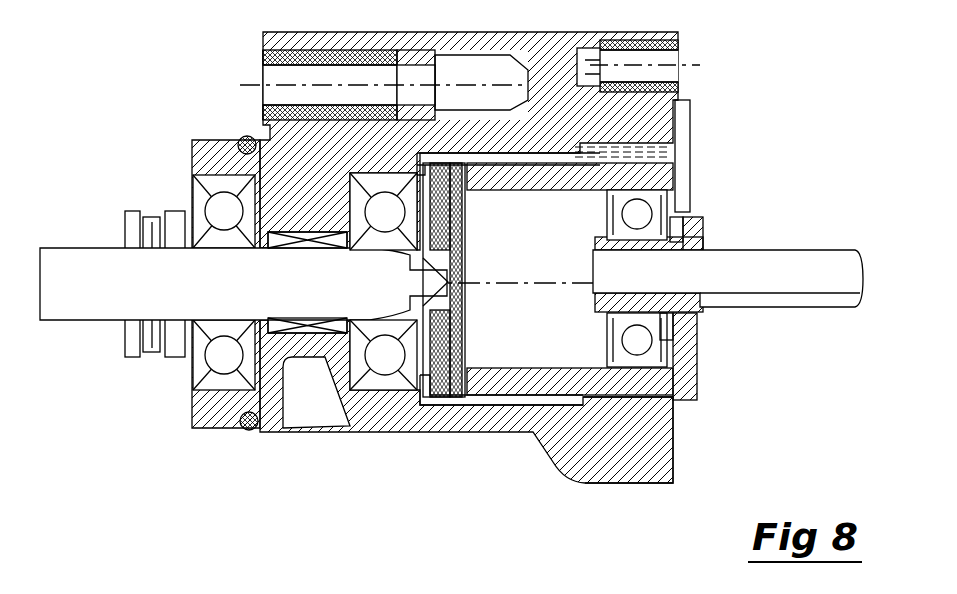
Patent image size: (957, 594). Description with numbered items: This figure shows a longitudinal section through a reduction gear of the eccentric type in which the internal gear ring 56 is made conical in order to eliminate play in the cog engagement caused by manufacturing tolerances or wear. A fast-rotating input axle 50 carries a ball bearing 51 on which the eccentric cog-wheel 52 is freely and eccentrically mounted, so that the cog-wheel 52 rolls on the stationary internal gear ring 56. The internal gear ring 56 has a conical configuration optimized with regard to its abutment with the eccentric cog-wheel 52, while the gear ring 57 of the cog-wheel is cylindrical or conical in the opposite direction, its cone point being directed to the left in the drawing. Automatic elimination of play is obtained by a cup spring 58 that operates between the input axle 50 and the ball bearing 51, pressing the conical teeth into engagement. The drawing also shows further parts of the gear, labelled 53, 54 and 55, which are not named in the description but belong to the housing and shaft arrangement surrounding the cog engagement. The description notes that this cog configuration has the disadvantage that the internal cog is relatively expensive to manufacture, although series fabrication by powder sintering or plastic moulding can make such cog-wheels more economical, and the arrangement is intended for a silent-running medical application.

The input axle 50 is at (790, 297).
The ball bearing 51 is at (648, 343).
The eccentric cog-wheel 52 is at (695, 383).
The housing end block 53 is at (660, 445).
The magnet plate 54 is at (447, 387).
The input shaft 55 is at (322, 300).
The internal gear ring 56 is at (563, 467).
The gear ring of the cog-wheel 57 is at (693, 440).
The cup spring 58 is at (673, 217).